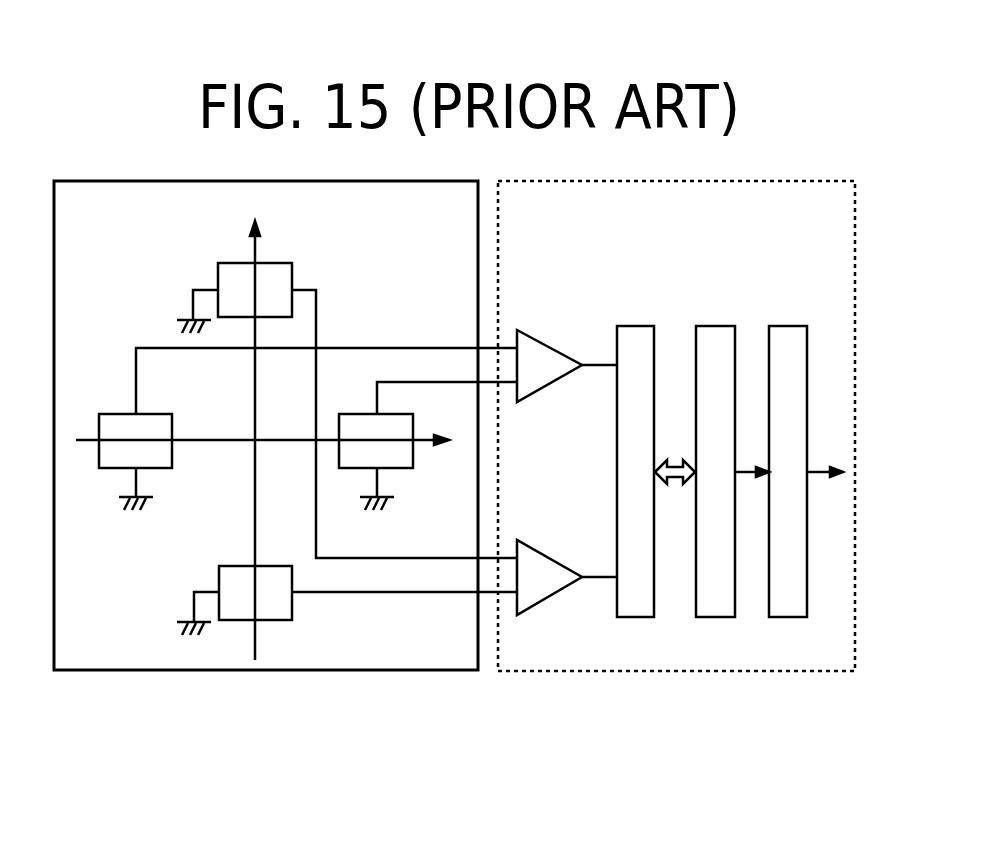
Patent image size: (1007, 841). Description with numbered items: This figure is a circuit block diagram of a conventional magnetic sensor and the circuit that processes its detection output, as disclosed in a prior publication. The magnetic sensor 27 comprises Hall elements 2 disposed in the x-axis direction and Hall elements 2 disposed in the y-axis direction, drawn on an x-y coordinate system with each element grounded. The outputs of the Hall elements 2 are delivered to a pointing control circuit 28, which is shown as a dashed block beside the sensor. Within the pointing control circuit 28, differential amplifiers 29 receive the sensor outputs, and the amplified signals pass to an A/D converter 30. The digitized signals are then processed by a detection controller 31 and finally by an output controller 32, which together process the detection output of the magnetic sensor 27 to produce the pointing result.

The sensor element 2 is at (293, 268).
The magnetic sensor 27 is at (195, 672).
The pointing control circuit 28 is at (660, 672).
The differential amplifiers 29 is at (552, 383).
The A/D converter 30 is at (633, 326).
The detection controller 31 is at (712, 326).
The output controller 32 is at (786, 326).